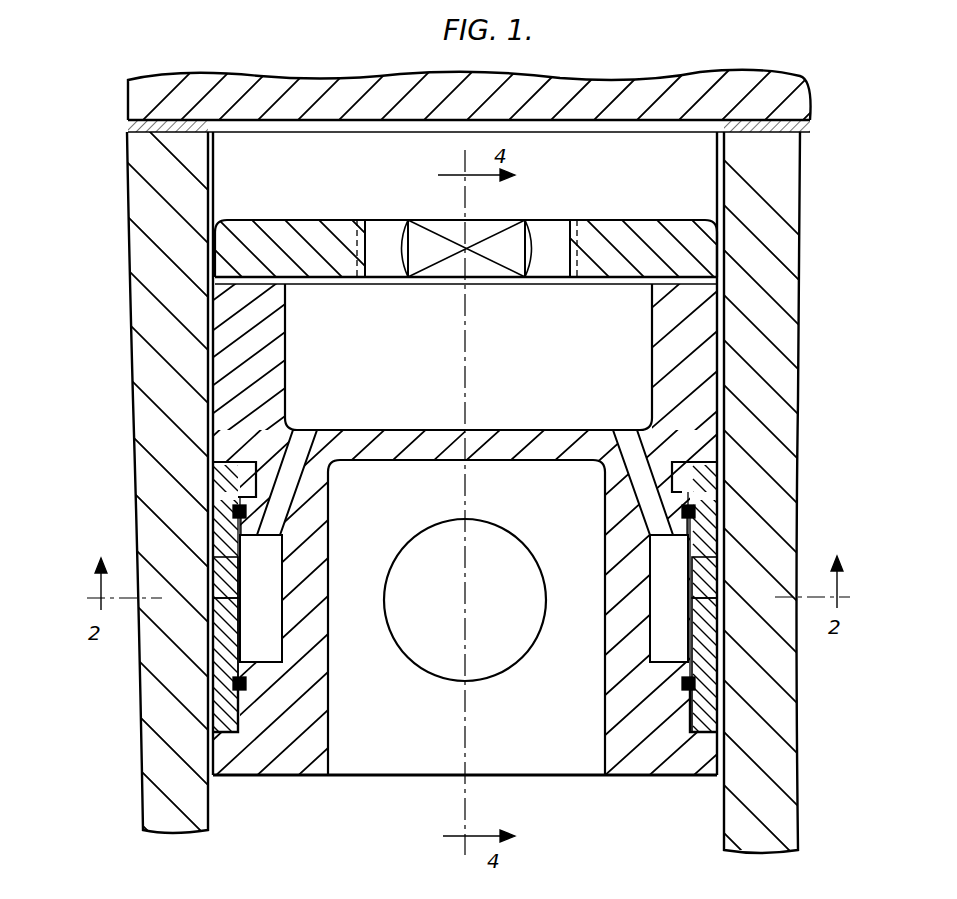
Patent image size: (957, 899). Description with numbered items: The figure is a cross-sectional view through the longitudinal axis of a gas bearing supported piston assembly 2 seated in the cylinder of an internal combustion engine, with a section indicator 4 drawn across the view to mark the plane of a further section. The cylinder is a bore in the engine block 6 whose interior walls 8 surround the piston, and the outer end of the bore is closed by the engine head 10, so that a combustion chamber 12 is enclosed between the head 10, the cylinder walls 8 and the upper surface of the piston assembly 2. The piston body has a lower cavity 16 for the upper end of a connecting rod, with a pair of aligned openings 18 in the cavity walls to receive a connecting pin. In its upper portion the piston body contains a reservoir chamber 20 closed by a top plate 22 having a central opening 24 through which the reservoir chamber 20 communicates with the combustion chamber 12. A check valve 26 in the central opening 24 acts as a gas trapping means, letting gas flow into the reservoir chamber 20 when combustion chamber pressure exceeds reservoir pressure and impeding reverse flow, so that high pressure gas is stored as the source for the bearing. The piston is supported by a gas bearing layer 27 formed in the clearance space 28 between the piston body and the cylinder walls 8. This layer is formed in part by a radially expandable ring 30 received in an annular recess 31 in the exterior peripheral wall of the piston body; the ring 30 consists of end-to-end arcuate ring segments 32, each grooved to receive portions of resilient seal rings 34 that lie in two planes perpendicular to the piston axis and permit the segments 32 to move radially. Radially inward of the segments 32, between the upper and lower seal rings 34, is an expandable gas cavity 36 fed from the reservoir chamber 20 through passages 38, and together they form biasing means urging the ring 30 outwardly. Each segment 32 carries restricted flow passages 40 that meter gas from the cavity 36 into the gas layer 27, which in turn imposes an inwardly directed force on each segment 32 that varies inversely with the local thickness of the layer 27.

The piston assembly 2 is at (291, 218).
The ceiling panel 4 is at (718, 128).
The engine block 6 is at (797, 316).
The interior walls of the cylinder 8 is at (724, 192).
The engine head 10 is at (711, 78).
The combustion chamber 12 is at (604, 172).
The lower cavity 16 is at (412, 506).
The aligned openings 18 is at (405, 663).
The reservoir chamber 20 is at (526, 350).
The top plate 22 is at (631, 222).
The central opening 24 is at (569, 224).
The check valve 26 is at (421, 218).
The gas bearing layer 27 is at (209, 707).
The clearance space 28 is at (216, 538).
The radially expandable ring 30 is at (210, 516).
The annular recess 31 is at (464, 625).
The ring segments 32 is at (220, 634).
The seal rings 34 is at (232, 506).
The expandable gas cavity 36 is at (271, 631).
The passages 38 is at (308, 437).
The restricted flow passages 40 is at (240, 577).